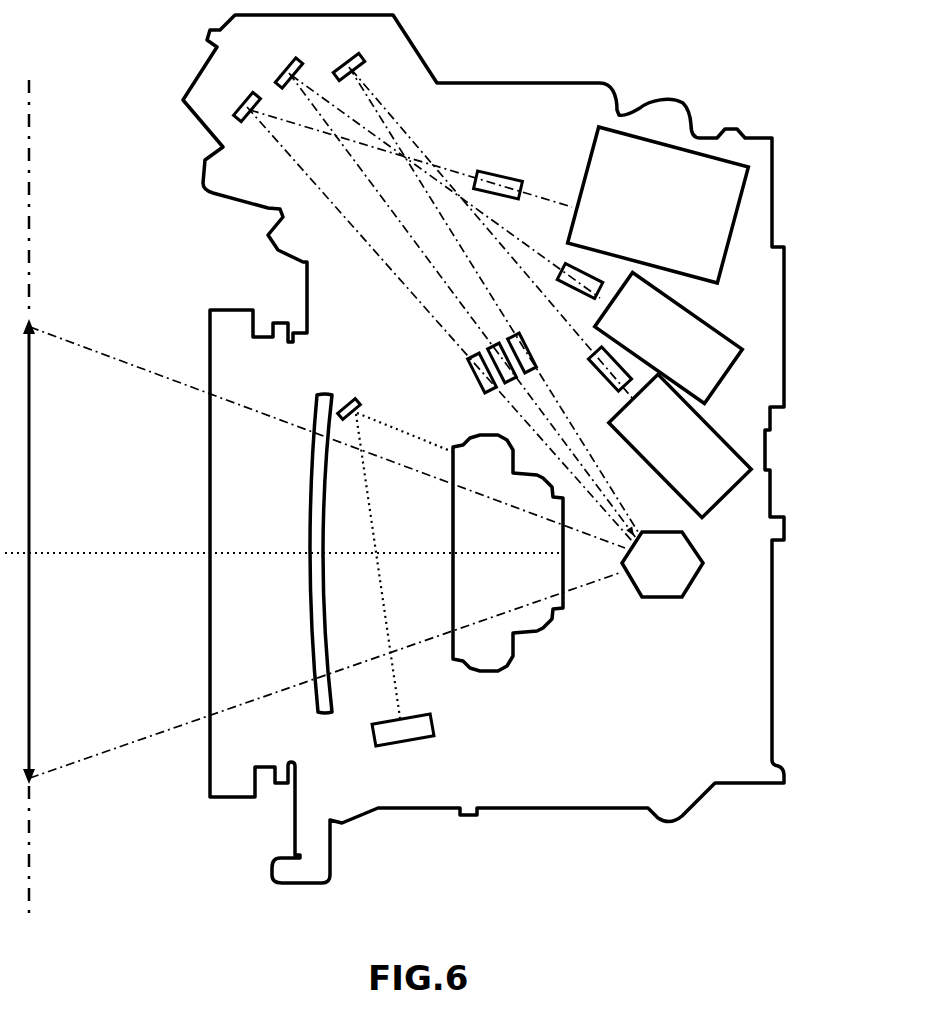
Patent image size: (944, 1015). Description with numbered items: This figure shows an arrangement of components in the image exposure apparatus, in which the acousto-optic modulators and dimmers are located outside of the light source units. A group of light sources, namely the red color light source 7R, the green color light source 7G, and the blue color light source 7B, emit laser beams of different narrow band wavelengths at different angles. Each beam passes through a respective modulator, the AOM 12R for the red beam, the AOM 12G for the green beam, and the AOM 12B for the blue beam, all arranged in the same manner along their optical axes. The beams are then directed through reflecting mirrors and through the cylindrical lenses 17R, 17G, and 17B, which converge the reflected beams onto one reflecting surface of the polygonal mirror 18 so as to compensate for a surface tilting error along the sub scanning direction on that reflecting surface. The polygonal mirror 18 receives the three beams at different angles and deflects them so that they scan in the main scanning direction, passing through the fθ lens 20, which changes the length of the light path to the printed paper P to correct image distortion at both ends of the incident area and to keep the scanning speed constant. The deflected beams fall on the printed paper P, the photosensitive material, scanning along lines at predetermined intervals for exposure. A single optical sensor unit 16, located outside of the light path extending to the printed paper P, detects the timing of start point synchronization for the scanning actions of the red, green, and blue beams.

The red color light source 7R is at (658, 205).
The blue color light source 7B is at (669, 338).
The green color light source 7G is at (680, 445).
The AOM 12R is at (507, 173).
The AOM 12B is at (607, 277).
The AOM 12G is at (627, 368).
The optical sensor unit 16 is at (420, 743).
The cylindrical lens 17R is at (470, 380).
The cylindrical lens 17G is at (520, 337).
The cylindrical lens 17B is at (490, 347).
The polygonal mirror 18 is at (663, 598).
The fθ lens 20 is at (500, 670).
The printed paper P is at (30, 715).